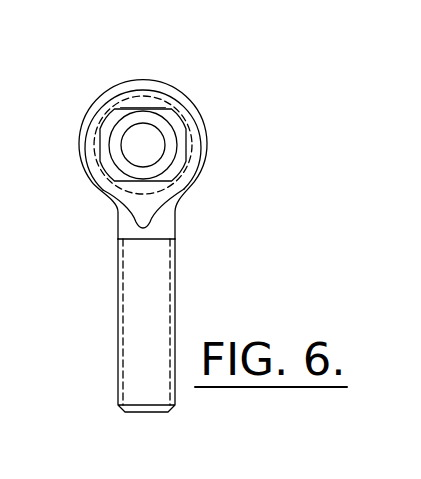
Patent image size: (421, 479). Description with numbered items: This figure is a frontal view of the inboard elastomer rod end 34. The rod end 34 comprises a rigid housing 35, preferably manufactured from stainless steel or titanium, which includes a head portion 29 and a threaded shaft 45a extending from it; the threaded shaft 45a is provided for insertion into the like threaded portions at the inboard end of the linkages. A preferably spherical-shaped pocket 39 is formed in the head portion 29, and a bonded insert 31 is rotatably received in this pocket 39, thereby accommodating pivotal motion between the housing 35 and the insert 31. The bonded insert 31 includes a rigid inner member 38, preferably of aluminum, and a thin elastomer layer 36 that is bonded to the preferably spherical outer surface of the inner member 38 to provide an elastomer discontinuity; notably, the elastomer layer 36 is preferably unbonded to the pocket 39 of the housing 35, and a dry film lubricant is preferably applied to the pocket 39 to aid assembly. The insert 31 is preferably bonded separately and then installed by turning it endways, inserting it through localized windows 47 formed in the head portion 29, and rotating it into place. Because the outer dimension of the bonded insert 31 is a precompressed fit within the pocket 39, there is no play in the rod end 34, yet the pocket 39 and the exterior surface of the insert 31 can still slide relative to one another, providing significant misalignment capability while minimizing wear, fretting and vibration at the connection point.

The elastomer rod end 34 is at (178, 85).
The head portion 29 is at (122, 97).
The bonded insert 31 is at (108, 167).
The localized windows 47 is at (106, 133).
The pocket 39 is at (148, 108).
The elastomer layer 36 is at (182, 158).
The inner member 38 is at (167, 132).
The rigid housing 35 is at (179, 253).
The threaded shaft 45a is at (157, 325).